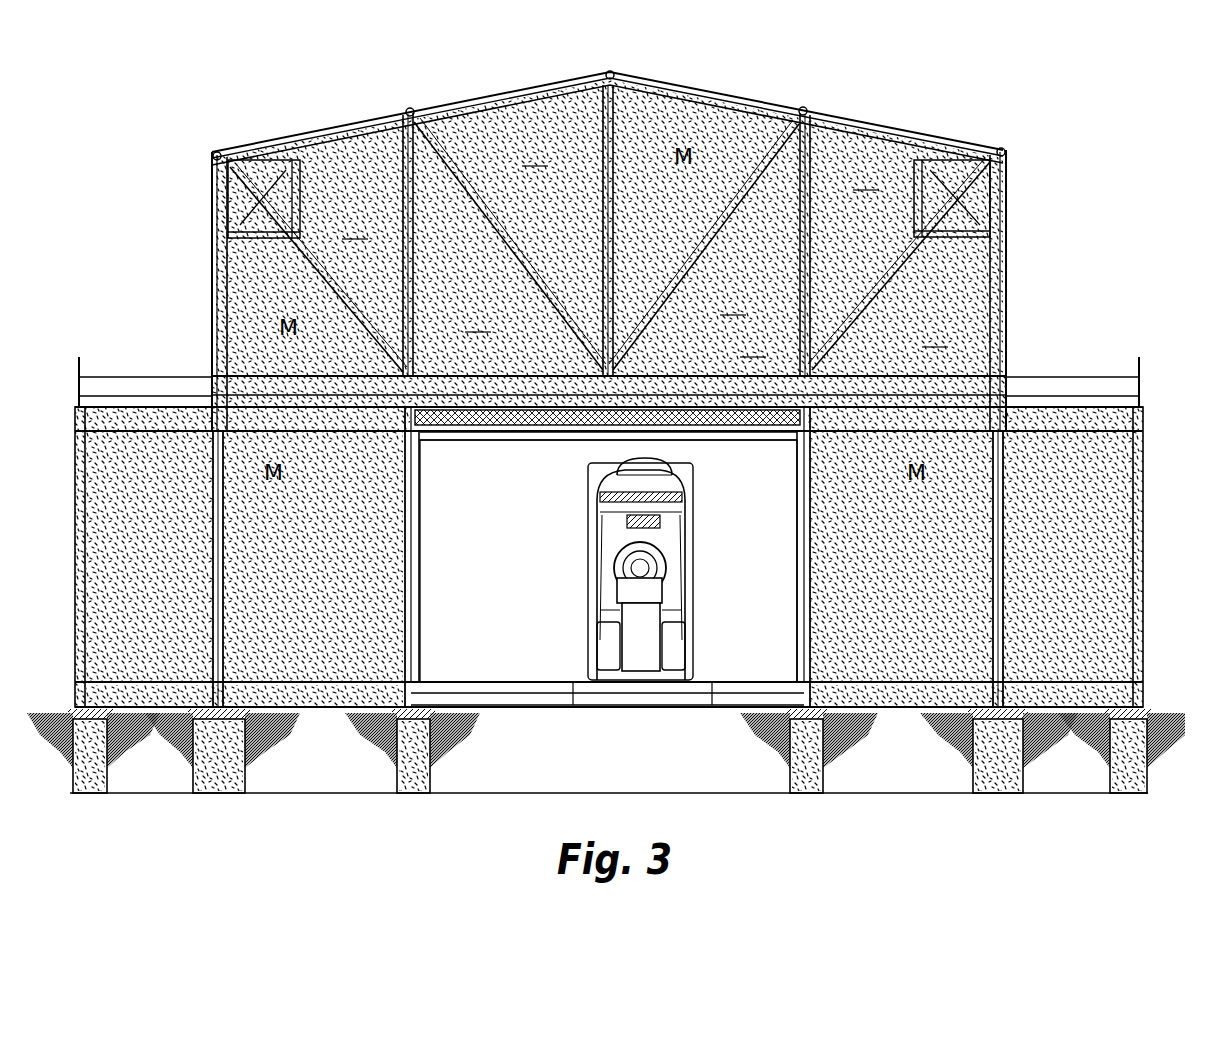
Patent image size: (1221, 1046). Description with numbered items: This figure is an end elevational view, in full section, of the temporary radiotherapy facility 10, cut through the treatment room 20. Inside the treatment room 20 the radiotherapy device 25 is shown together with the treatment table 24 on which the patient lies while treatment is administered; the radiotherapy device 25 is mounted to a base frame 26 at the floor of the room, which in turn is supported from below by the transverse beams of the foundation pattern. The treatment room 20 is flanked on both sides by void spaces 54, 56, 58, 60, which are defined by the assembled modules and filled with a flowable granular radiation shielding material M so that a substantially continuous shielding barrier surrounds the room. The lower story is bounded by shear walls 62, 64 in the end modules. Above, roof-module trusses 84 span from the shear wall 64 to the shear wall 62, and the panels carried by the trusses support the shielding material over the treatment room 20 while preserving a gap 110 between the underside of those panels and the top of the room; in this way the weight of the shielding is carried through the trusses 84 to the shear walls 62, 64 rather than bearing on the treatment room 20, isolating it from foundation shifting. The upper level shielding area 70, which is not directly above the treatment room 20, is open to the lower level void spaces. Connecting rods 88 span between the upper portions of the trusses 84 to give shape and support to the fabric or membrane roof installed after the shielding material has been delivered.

The temporary radiotherapy facility 10 is at (932, 70).
The treatment room 20 is at (522, 520).
The treatment table 24 is at (668, 588).
The radiotherapy device 25 is at (665, 470).
The base frame 26 is at (610, 707).
The void space 54 is at (931, 567).
The void space 56 is at (1082, 594).
The void space 58 is at (318, 530).
The void space 60 is at (152, 547).
The shear wall 62 is at (1006, 464).
The shear wall 64 is at (232, 604).
The upper level shielding area 70 is at (609, 258).
The truss 84 is at (609, 228).
The connecting rod 88 is at (212, 148).
The gap 110 is at (560, 440).